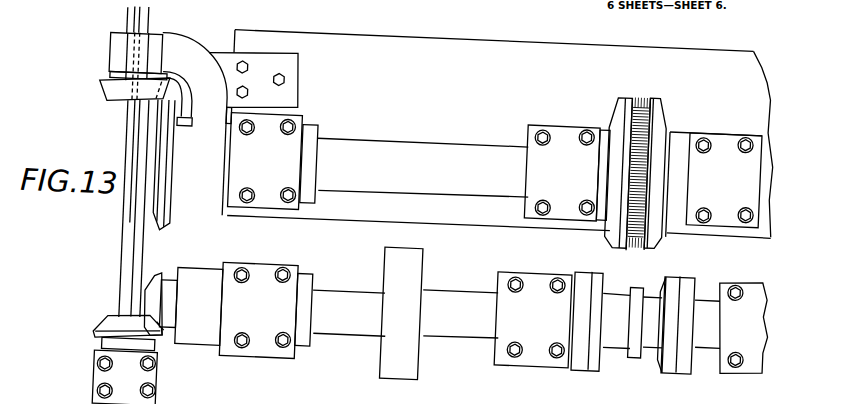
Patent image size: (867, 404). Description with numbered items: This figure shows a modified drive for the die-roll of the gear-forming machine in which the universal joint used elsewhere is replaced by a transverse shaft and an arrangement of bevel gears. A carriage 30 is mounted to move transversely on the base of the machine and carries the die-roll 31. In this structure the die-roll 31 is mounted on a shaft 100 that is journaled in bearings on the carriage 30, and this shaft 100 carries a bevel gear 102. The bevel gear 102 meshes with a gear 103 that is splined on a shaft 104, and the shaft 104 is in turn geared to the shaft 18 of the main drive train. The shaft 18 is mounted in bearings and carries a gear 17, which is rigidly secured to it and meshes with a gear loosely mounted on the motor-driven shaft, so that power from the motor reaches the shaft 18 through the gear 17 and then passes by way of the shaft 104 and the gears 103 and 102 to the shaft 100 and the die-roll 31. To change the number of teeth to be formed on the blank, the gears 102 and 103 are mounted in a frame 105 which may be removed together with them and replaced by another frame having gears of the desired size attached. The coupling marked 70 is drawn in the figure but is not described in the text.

The gear 17 is at (416, 269).
The shaft 18 is at (352, 300).
The carriage 30 is at (235, 46).
The die-roll 31 is at (638, 88).
The coupling 70 is at (657, 333).
The shaft 100 is at (397, 149).
The bevel gear 102 is at (169, 226).
The gear 103 is at (103, 105).
The shaft 104 is at (130, 256).
The frame 105 is at (171, 63).